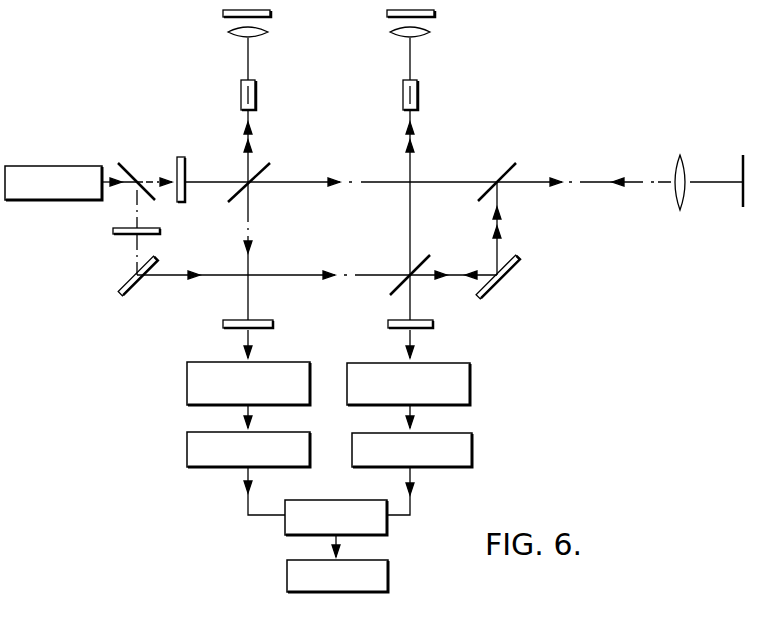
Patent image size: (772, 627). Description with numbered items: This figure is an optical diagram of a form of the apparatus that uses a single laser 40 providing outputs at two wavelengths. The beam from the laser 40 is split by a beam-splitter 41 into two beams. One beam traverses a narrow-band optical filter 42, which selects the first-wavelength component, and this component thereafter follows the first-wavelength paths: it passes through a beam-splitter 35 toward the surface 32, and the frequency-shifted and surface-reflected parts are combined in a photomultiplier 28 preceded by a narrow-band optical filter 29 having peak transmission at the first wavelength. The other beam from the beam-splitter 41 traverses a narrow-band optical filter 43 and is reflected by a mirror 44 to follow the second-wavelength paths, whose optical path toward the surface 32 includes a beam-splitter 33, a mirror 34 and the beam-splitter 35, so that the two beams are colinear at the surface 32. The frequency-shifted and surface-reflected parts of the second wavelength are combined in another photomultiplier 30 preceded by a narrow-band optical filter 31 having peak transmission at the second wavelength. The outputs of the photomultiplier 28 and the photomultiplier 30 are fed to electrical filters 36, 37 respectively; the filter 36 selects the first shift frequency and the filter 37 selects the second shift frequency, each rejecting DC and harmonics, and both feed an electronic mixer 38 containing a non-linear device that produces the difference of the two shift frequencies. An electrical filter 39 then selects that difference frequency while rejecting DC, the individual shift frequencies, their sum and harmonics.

The laser 40 is at (55, 165).
The beam-splitter 41 is at (128, 162).
The narrow-band optical filter 42 is at (182, 156).
The narrow-band optical filter 43 is at (113, 233).
The mirror 44 is at (127, 292).
The narrow-band optical filter 29 is at (223, 323).
The photomultiplier 28 is at (187, 392).
The electrical filter 36 is at (188, 467).
The narrow-band optical filter 31 is at (433, 324).
The photomultiplier 30 is at (470, 381).
The electrical filter 37 is at (472, 440).
The electronic mixer 38 is at (387, 530).
The electrical filter 39 is at (388, 568).
The beam-splitter 33 is at (430, 255).
The mirror 34 is at (513, 280).
The beam-splitter 35 is at (510, 162).
The surface 32 is at (742, 157).